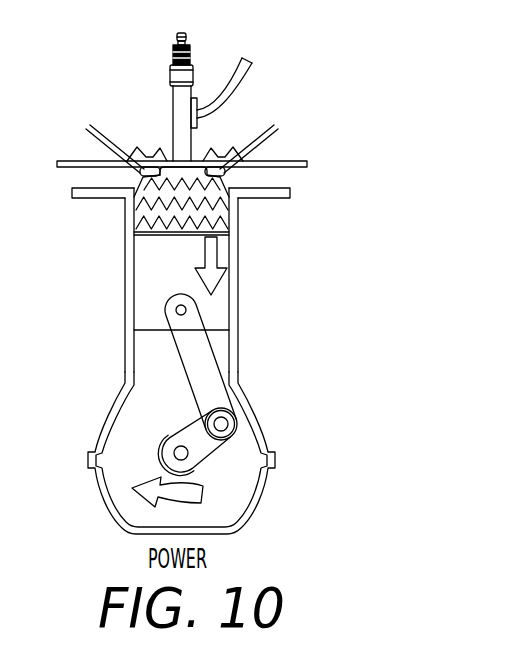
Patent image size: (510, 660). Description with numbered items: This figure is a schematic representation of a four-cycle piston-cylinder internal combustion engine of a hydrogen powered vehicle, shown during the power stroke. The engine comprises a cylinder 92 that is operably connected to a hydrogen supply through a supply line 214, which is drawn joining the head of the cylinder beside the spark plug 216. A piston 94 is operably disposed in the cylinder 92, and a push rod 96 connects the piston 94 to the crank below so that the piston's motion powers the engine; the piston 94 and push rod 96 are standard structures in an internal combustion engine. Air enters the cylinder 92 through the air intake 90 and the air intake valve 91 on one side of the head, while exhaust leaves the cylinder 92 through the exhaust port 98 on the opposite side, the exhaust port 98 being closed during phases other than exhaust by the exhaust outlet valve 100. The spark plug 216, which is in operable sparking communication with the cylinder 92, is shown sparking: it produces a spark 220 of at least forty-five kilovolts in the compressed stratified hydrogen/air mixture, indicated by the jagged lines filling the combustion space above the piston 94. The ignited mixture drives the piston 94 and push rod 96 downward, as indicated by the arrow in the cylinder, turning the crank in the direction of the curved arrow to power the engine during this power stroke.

The air intake 90 is at (122, 186).
The air intake valve 91 is at (110, 137).
The cylinder 92 is at (233, 268).
The piston 94 is at (217, 310).
The push rod 96 is at (230, 398).
The exhaust port 98 is at (233, 186).
The exhaust outlet valve 100 is at (273, 137).
The supply line 214 is at (224, 78).
The spark plug 216 is at (160, 99).
The spark 220 is at (192, 165).